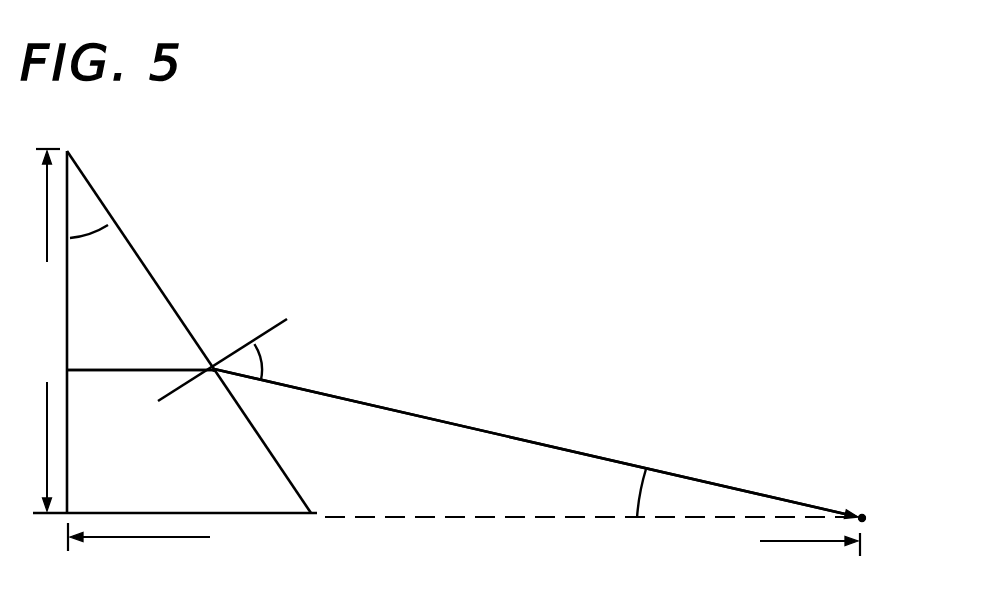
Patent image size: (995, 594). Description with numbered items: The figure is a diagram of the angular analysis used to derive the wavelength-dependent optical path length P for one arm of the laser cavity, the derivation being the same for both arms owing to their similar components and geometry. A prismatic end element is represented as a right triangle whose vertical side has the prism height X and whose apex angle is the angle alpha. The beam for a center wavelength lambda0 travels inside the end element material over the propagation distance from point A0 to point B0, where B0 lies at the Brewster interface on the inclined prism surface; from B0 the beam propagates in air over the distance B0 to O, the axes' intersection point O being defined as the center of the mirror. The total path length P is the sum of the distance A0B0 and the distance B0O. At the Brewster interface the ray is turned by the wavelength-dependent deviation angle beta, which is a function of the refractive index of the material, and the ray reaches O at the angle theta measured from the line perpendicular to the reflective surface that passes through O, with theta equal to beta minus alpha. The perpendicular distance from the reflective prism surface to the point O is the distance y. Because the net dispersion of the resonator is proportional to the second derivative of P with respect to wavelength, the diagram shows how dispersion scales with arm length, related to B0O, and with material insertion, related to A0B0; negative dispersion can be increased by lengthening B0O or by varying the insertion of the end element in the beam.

The prism height X is at (48, 330).
The point A0 is at (118, 363).
The point B0 is at (209, 337).
The apex angle of the prism alpha is at (96, 250).
The deviation angle beta is at (270, 339).
The center wavelength lambda0 is at (445, 416).
The angle theta is at (612, 481).
The axes' intersection point O is at (873, 503).
The perpendicular distance y is at (464, 551).